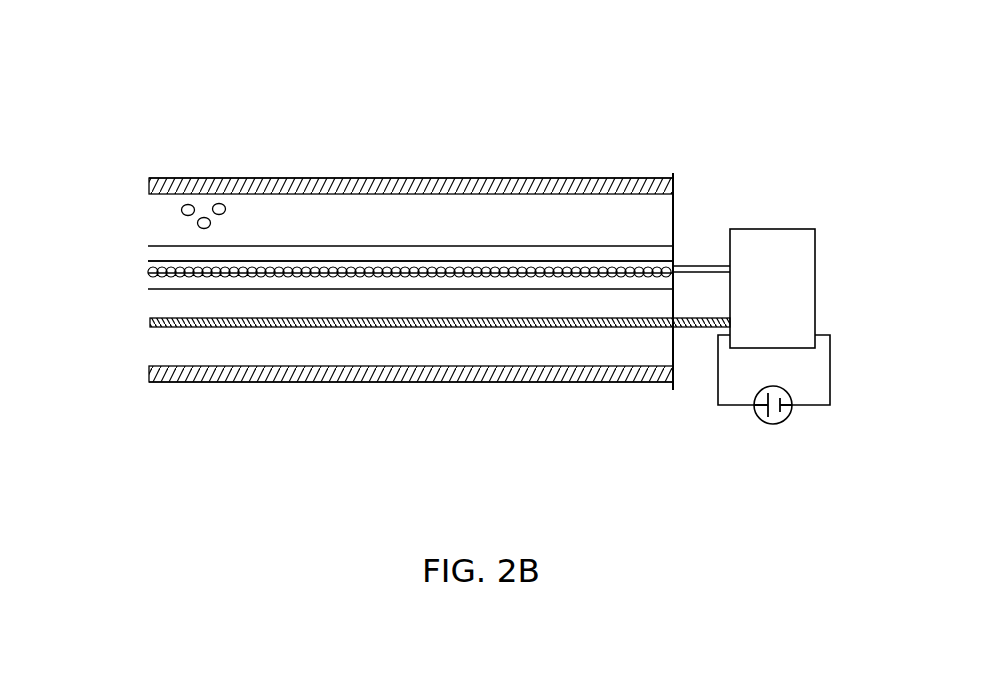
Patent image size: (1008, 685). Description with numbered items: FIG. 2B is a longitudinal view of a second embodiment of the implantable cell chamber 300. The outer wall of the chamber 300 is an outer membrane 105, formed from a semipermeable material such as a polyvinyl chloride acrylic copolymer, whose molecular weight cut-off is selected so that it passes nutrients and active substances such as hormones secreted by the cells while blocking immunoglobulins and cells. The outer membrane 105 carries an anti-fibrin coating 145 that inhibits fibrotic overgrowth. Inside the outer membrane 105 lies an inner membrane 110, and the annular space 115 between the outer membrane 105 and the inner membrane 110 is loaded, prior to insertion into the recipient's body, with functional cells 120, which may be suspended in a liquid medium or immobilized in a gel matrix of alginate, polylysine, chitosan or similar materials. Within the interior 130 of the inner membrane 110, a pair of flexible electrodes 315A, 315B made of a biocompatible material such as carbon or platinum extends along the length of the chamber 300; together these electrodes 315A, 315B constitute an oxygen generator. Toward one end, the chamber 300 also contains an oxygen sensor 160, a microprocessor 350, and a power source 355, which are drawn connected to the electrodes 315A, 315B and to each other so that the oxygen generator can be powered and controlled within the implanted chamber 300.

The chamber 300 is at (688, 68).
The outer membrane 105 is at (273, 207).
The anti-fibrin coating 145 is at (368, 178).
The inner membrane 110 is at (527, 247).
The annular space 115 is at (618, 217).
The functional cells 120 is at (144, 213).
The interior of the inner membrane 130 is at (440, 255).
The flexible electrode 315A is at (148, 261).
The flexible electrode 315B is at (150, 274).
The oxygen sensor 160 is at (557, 328).
The microprocessor 350 is at (815, 287).
The power source 355 is at (770, 425).